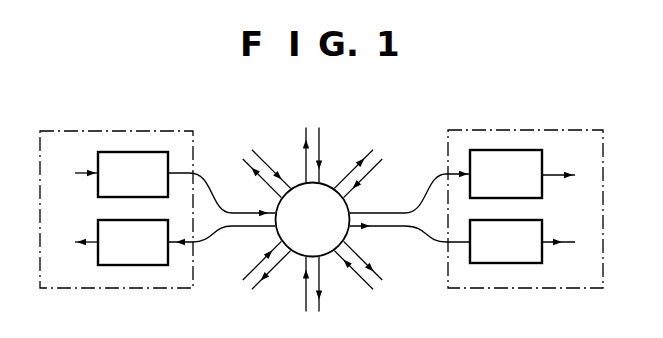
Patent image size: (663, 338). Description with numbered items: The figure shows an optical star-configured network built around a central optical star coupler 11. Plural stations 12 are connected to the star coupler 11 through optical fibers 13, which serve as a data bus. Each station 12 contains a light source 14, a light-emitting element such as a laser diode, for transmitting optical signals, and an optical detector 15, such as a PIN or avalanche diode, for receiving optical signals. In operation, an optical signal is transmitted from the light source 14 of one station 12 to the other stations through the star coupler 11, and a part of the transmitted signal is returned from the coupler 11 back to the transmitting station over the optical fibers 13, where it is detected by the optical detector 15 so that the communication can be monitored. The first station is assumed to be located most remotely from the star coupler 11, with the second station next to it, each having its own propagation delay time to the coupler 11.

The optical star coupler 11 is at (322, 258).
The station 12 is at (103, 131).
The optical fiber 13 is at (385, 210).
The light source 14 is at (99, 195).
The optical detector 15 is at (100, 261).